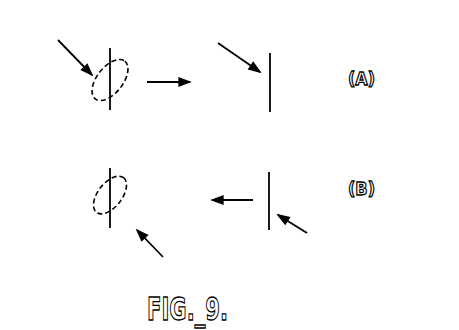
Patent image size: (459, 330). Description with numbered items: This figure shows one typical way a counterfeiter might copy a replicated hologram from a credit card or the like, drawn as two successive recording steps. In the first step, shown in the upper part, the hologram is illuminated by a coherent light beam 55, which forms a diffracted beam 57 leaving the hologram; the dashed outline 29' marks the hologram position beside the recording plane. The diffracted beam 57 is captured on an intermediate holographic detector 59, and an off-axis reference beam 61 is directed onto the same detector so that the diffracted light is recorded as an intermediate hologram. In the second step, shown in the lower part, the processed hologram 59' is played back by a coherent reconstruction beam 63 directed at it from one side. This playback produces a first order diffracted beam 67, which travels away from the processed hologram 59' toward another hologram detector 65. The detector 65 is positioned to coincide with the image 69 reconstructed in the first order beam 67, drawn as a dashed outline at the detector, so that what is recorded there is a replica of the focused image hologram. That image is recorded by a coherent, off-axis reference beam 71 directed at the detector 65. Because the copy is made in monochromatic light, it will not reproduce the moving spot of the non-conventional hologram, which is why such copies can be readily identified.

The hologram image position 29' is at (118, 73).
The coherent light beam 55 is at (79, 62).
The diffracted beam 57 is at (158, 83).
The intermediate holographic detector 59 is at (289, 82).
The off-axis reference beam 61 is at (220, 45).
The coherent reconstruction beam 63 is at (307, 235).
The hologram detector 65 is at (108, 222).
The first order diffracted beam 67 is at (235, 200).
The reconstructed image 69 is at (102, 197).
The coherent off-axis reference beam 71 is at (158, 252).
The processed hologram 59' is at (290, 201).